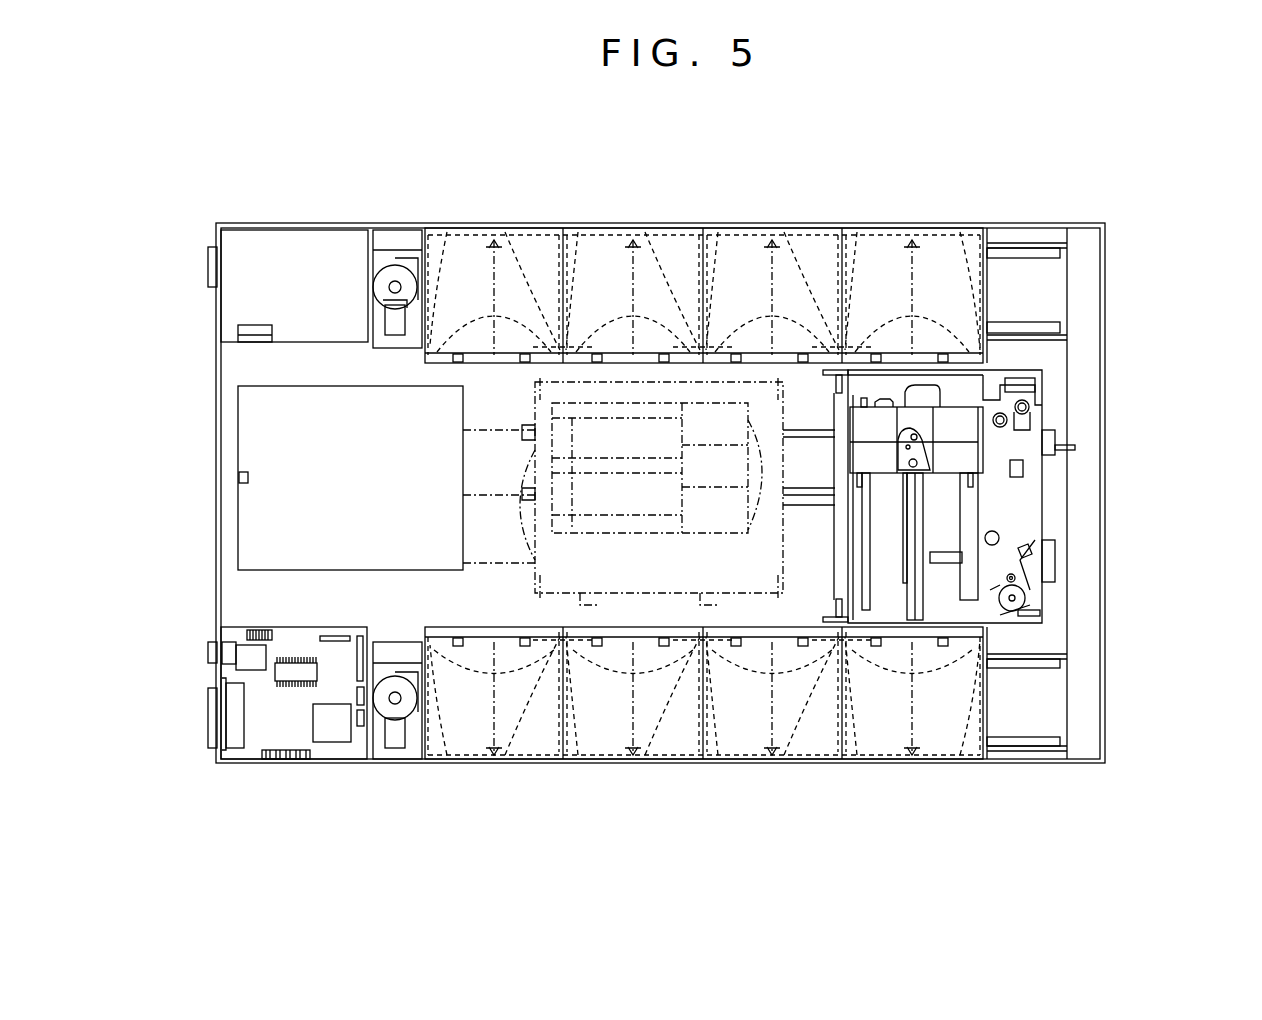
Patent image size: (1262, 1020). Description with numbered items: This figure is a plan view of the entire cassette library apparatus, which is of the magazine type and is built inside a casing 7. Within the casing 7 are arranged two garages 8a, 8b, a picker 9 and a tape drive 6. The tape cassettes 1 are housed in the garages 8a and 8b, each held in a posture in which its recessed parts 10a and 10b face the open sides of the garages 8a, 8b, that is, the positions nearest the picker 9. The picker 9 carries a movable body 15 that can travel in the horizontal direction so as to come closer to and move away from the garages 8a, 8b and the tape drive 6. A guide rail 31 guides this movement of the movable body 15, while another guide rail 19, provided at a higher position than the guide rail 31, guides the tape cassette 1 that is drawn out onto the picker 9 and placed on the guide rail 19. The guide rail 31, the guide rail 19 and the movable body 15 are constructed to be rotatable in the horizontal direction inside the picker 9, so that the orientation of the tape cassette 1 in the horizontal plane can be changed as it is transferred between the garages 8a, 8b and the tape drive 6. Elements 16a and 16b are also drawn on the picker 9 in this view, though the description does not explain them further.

The tape cassette 1 is at (883, 262).
The tape drive 6 is at (265, 516).
The casing 7 is at (1104, 393).
The garage 8a is at (988, 282).
The garage 8b is at (992, 713).
The picker 9 is at (653, 383).
The recessed part 10a is at (845, 298).
The recessed part 10b is at (975, 343).
The movable body 15 is at (950, 418).
The first guide shaft 16a is at (978, 480).
The second guide shaft 16b is at (855, 484).
The guide rail 19 is at (965, 510).
The guide rail 31 is at (915, 602).